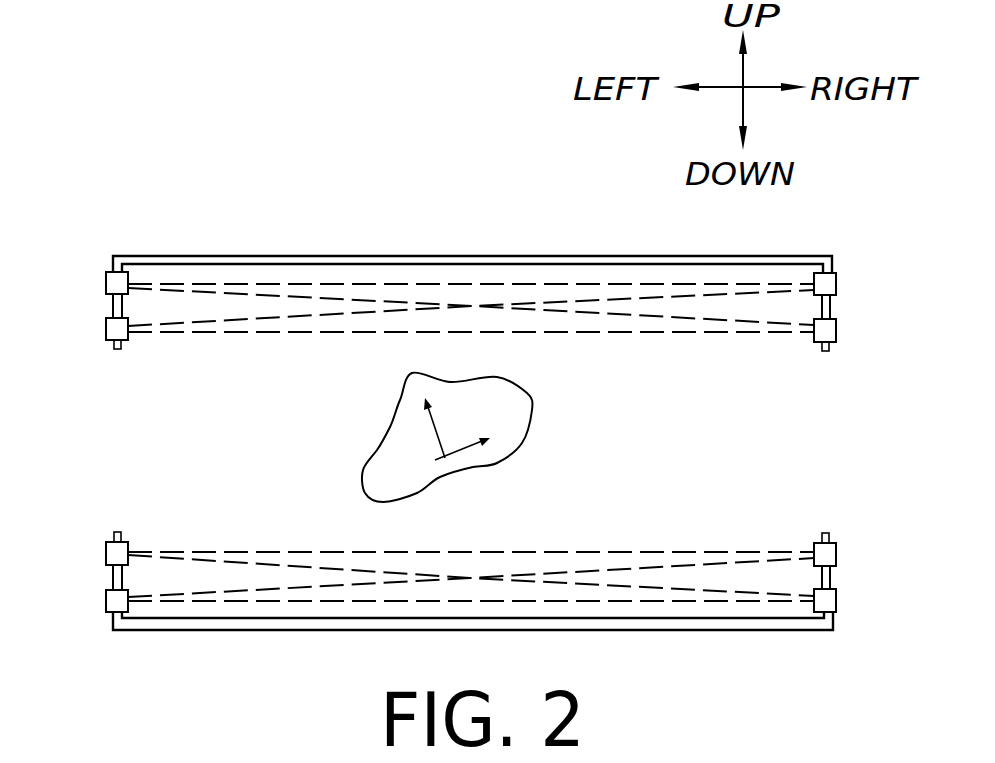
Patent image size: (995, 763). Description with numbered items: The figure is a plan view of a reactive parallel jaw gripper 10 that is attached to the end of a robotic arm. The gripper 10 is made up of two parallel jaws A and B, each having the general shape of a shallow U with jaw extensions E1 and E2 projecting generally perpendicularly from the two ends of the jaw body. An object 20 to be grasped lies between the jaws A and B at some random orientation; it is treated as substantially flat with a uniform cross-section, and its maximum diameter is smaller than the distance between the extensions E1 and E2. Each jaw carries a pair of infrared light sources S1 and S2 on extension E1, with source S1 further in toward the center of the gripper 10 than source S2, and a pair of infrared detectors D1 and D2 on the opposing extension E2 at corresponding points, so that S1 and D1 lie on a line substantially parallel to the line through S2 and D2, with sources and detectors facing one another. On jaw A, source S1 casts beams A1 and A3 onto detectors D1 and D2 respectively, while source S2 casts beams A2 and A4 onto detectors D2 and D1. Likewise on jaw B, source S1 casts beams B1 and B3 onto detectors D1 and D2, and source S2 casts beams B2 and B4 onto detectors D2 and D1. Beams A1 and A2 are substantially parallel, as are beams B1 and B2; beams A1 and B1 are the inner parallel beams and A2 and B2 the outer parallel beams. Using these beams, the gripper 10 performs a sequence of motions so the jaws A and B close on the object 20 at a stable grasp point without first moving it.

The parallel jaw gripper 10 is at (252, 192).
The object 20 is at (471, 437).
The jaw A is at (513, 223).
The jaw B is at (575, 631).
The light source S1 is at (106, 330).
The light source S2 is at (106, 285).
The optical detector D1 is at (837, 330).
The optical detector D2 is at (837, 287).
The jaw extension E1 is at (118, 349).
The jaw extension E2 is at (826, 351).
The light beam A1 is at (343, 333).
The light beam A2 is at (572, 286).
The light beam A3 is at (267, 320).
The light beam A4 is at (670, 332).
The light beam B1 is at (290, 552).
The light beam B2 is at (515, 601).
The light beam B3 is at (218, 592).
The light beam B4 is at (655, 592).